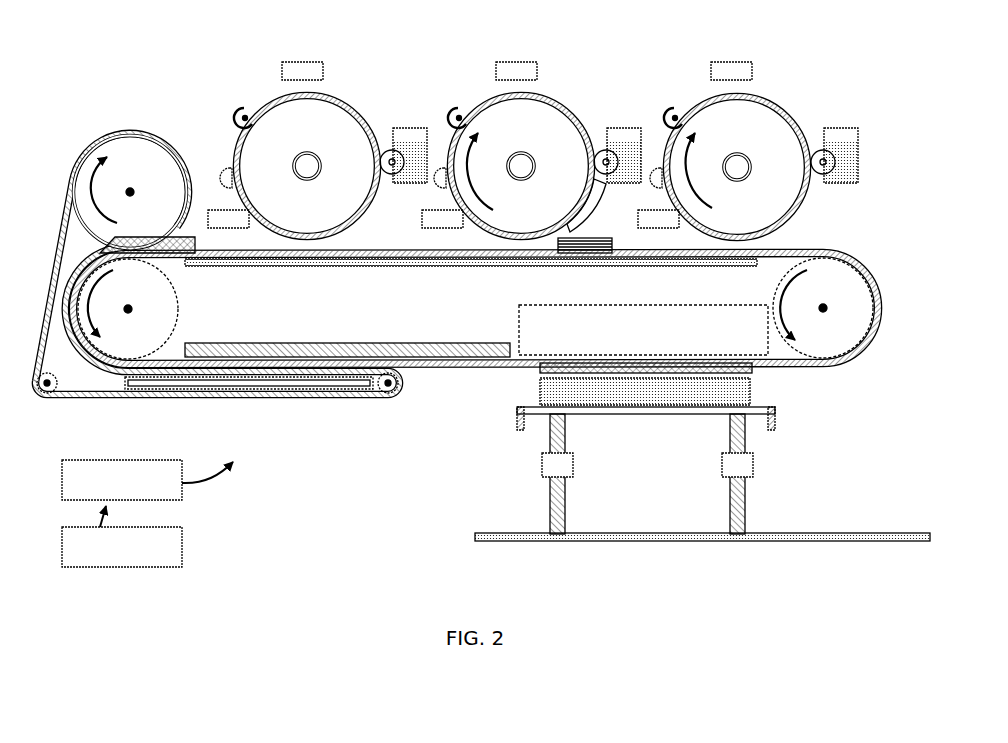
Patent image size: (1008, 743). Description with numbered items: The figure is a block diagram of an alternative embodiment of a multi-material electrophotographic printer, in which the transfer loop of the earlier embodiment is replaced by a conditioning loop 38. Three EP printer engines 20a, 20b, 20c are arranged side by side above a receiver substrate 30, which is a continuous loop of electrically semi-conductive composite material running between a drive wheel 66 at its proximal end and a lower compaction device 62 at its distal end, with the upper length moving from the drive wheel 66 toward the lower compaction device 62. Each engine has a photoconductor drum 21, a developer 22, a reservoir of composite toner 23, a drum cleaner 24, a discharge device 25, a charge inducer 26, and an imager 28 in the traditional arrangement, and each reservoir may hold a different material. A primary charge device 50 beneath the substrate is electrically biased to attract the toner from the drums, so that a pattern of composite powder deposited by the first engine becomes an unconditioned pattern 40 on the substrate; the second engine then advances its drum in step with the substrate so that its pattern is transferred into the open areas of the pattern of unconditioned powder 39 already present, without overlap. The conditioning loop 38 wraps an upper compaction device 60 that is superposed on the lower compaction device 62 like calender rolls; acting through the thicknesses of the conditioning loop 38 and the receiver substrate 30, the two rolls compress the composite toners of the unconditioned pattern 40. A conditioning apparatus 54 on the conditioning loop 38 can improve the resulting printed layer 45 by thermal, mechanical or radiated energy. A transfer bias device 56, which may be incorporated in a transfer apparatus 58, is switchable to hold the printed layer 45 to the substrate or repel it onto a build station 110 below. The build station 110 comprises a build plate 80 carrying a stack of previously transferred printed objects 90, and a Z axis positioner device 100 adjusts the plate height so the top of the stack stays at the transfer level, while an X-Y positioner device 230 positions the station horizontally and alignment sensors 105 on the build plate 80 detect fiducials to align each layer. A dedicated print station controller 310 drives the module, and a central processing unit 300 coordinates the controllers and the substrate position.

The EP printer engine 20a is at (803, 108).
The EP printer engine 20b is at (527, 125).
The EP printer engine 20c is at (258, 78).
The photoconductor drum 21 is at (537, 98).
The developer 22 is at (632, 116).
The reservoir of composite toner 23 is at (633, 153).
The drum cleaner 24 is at (433, 229).
The discharge device / charge inducer 25 is at (442, 183).
The charging roller 26 is at (465, 107).
The imager 28 is at (517, 62).
The receiver substrate 30 is at (790, 252).
The conditioning loop 38 is at (53, 285).
The pattern of unconditioned powder 39 is at (613, 240).
The unconditioned pattern 40 is at (195, 247).
The printed layer 45 is at (540, 366).
The primary charge device 50 is at (320, 267).
The conditioning apparatus 54 is at (302, 387).
The transfer bias device 56 is at (385, 342).
The transfer apparatus 58 is at (525, 323).
The upper compaction device 60 is at (121, 145).
The lower compaction device 62 is at (183, 308).
The drive wheel 66 is at (850, 265).
The build plate 80 is at (640, 417).
The previously transferred printed objects 90 is at (753, 395).
The Z axis positioner device 100 is at (565, 505).
The alignment sensor 105 is at (517, 420).
The build station 110 is at (607, 470).
The X-Y positioner device 230 is at (780, 535).
The central processing unit 300 is at (182, 548).
The print station controller 310 is at (182, 500).